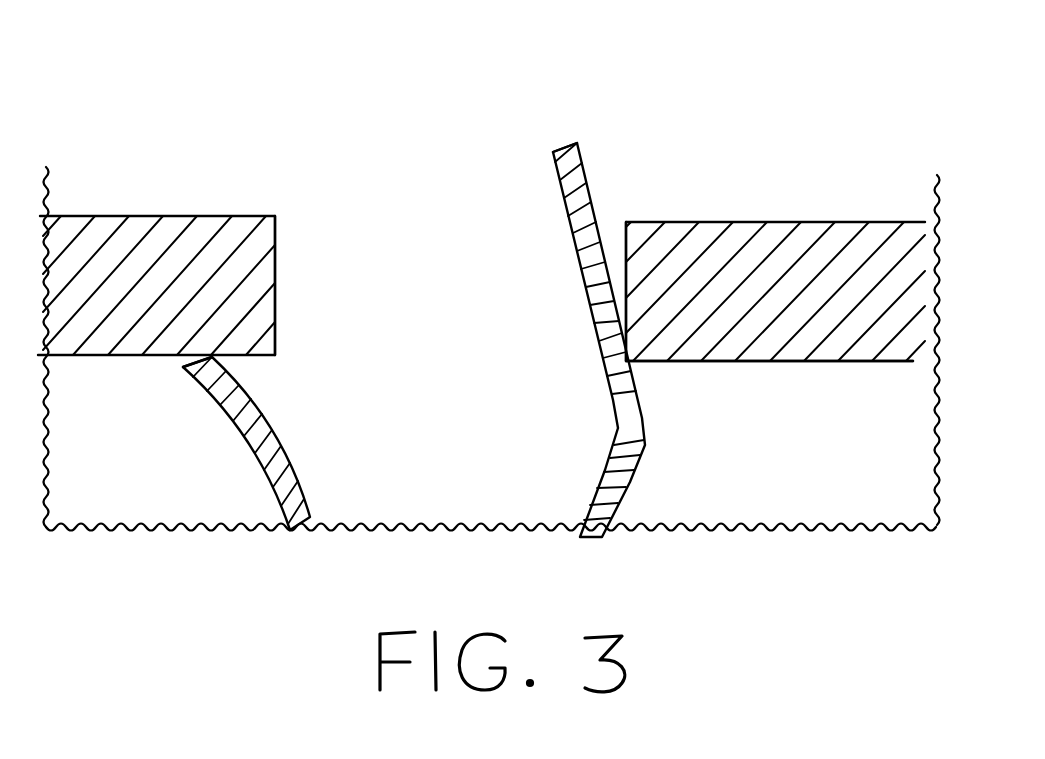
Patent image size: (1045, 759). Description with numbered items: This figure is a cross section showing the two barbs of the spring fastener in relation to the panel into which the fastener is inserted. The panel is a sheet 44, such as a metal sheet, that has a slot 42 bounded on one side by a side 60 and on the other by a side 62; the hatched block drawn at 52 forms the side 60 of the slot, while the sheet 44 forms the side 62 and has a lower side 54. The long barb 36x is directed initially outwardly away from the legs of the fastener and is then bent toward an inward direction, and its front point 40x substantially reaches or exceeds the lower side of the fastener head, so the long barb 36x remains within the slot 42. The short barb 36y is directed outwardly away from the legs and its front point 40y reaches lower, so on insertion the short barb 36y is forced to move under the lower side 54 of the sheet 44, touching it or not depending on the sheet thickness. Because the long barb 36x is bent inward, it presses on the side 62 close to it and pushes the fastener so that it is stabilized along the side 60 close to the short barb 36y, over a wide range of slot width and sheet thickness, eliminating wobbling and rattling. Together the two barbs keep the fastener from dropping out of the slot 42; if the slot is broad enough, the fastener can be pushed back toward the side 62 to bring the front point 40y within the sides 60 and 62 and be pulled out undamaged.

The long barb 36x is at (617, 507).
The short barb 36y is at (263, 440).
The front point 40x is at (565, 141).
The front point 40y is at (200, 361).
The slot 42 is at (423, 279).
The sheet 44 is at (717, 257).
The left block 52 is at (152, 214).
The lower side 54 is at (757, 362).
The side 60 is at (278, 283).
The side 62 is at (624, 250).